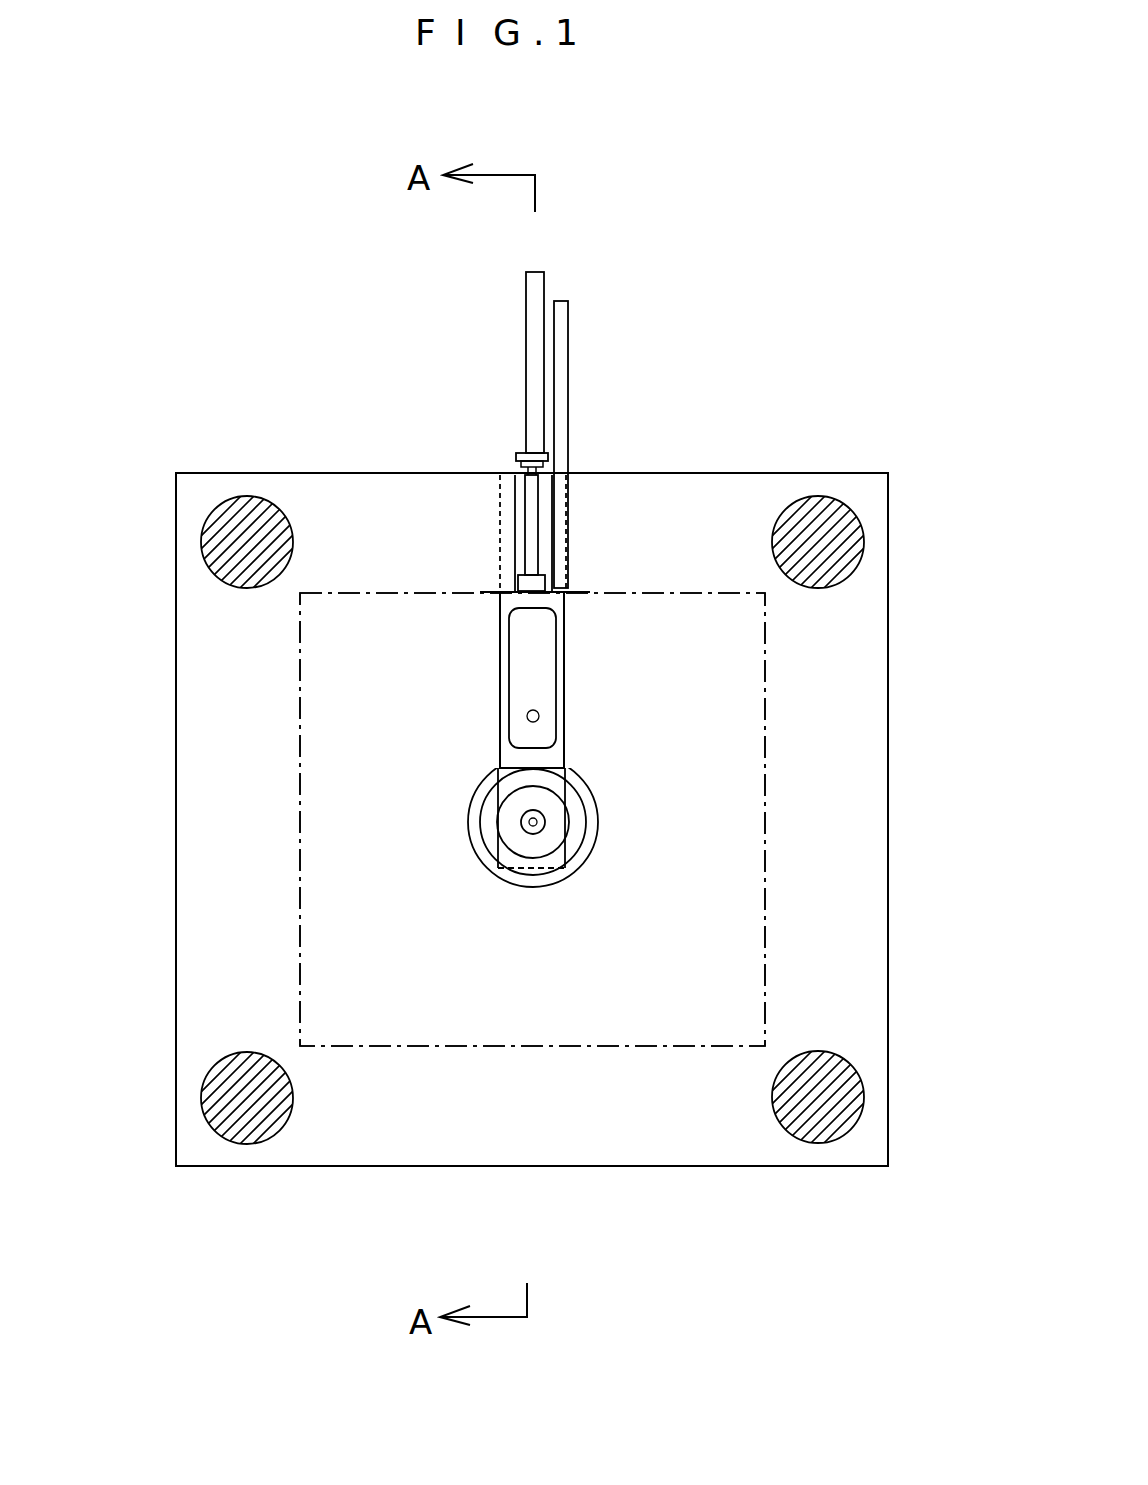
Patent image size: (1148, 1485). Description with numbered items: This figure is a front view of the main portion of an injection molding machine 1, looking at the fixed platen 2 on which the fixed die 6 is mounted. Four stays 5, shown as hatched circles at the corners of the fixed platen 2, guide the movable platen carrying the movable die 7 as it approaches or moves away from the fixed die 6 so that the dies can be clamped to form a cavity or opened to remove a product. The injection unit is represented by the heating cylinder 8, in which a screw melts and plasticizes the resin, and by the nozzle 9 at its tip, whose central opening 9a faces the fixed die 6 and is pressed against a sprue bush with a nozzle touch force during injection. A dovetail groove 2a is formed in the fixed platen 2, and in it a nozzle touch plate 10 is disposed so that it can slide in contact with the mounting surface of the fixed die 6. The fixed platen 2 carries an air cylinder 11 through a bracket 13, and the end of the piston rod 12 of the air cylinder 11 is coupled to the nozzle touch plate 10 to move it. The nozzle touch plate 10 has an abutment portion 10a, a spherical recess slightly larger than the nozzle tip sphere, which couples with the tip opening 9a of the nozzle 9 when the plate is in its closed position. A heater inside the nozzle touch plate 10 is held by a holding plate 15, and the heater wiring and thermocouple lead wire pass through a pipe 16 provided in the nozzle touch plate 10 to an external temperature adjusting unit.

The injection molding machine 1 is at (330, 418).
The fixed platen 2 is at (605, 1130).
The dovetail groove 2a is at (567, 500).
The stays 5 is at (805, 1115).
The fixed die 6 is at (300, 822).
The movable die 7 is at (532, 819).
The heating cylinder 8 is at (586, 828).
The nozzle 9 is at (547, 832).
The central opening of the nozzle 9a is at (533, 828).
The nozzle touch plate 10 is at (548, 758).
The abutment portion 10a is at (524, 710).
The air cylinder 11 is at (532, 313).
The piston rod 12 is at (532, 522).
The bracket 13 is at (518, 450).
The holding plate 15 is at (543, 683).
The pipe 16 is at (562, 363).